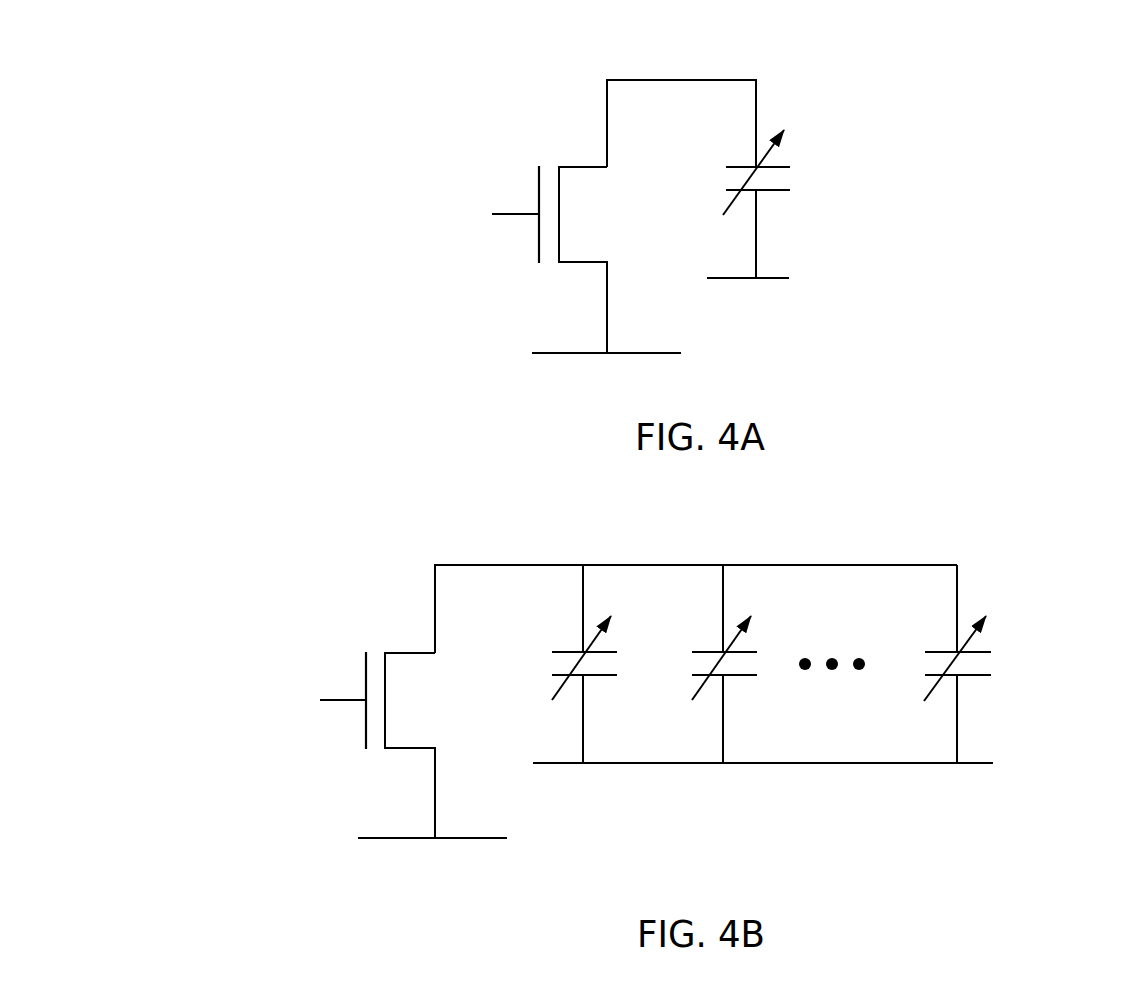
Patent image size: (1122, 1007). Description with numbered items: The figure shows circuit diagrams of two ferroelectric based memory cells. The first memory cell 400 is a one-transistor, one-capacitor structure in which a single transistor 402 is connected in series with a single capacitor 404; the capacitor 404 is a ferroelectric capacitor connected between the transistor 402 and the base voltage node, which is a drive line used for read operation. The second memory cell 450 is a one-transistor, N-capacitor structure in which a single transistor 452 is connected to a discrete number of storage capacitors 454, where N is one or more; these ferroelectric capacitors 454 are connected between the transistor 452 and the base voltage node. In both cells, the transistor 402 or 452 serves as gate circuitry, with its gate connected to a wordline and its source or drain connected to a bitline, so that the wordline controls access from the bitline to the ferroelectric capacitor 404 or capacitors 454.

In FIG. 4A, the memory cell 400 is at (376, 84).
In FIG. 4A, the transistor 402 is at (527, 166).
In FIG. 4A, the capacitor 404 is at (800, 158).
In FIG. 4B, the memory cell 450 is at (202, 568).
In FIG. 4B, the transistor 452 is at (353, 652).
In FIG. 4B, the capacitors 454 is at (1002, 599).